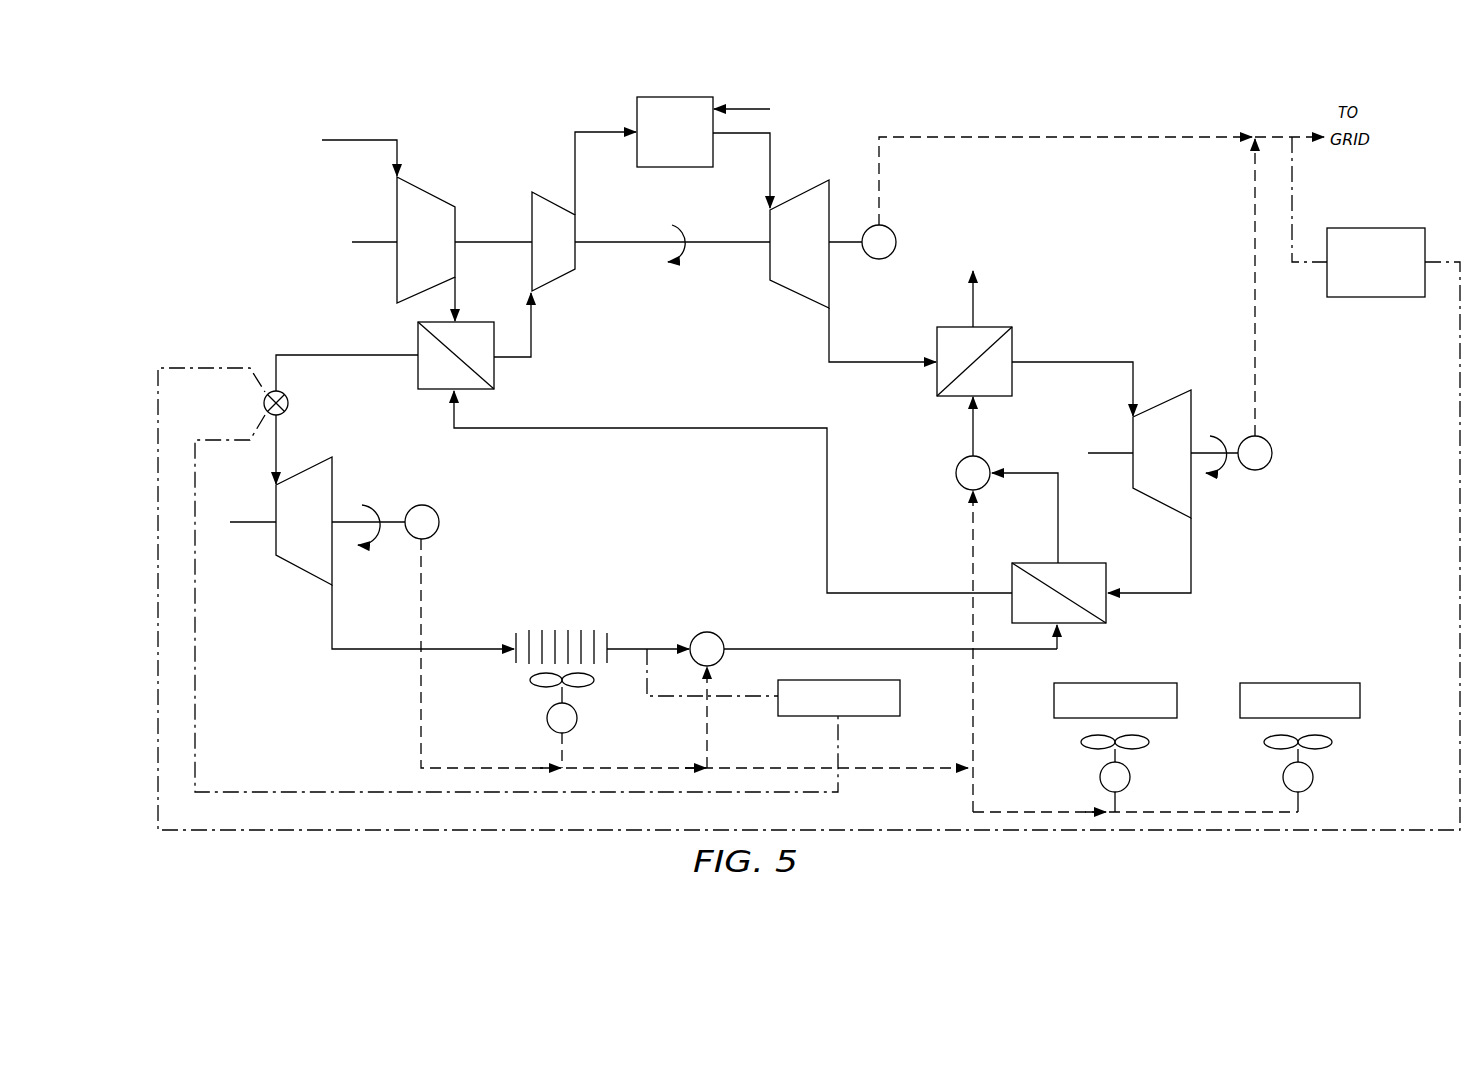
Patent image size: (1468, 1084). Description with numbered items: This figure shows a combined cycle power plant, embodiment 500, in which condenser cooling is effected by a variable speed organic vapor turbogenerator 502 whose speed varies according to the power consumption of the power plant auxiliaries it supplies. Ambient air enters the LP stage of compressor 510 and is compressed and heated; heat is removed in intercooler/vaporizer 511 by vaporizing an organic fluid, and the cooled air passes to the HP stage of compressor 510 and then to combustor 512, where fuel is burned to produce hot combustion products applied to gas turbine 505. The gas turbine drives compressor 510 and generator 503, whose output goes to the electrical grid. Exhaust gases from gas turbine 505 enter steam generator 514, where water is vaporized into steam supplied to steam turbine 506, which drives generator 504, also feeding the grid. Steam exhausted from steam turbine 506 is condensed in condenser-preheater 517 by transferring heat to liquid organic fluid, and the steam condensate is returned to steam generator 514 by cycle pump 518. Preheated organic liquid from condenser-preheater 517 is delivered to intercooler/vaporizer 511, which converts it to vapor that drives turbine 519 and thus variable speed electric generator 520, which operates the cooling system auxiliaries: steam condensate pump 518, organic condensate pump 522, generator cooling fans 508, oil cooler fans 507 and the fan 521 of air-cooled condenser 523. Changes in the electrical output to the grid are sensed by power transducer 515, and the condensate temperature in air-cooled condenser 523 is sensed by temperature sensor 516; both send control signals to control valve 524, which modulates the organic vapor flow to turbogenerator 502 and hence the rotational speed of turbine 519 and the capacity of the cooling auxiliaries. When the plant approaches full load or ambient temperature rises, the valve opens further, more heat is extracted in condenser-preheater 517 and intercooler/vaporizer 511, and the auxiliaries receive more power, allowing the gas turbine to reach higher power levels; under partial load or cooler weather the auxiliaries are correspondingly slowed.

The combined cycle system embodiment 500 is at (256, 830).
The organic vapor turbogenerator 502 is at (346, 597).
The generator 503 is at (891, 231).
The generator 504 is at (1267, 443).
The gas turbine 505 is at (810, 297).
The steam turbine 506 is at (1191, 393).
The oil cooler fans 507 is at (1177, 696).
The generator cooling fans 508 is at (1360, 696).
The compressor 510 is at (478, 184).
The intercooler/vaporizer 511 is at (494, 378).
The combustor 512 is at (700, 167).
The steam generator 514 is at (958, 327).
The power transducer 515 is at (1396, 297).
The temperature sensor 516 is at (900, 696).
The condenser-preheater 517 is at (1092, 623).
The cycle pump 518 is at (956, 466).
The turbine 519 is at (276, 548).
The variable speed electric generator 520 is at (436, 535).
The organic fluid condenser fan 521 is at (577, 722).
The organic condensate pump 522 is at (720, 638).
The air-cooled condenser 523 is at (574, 641).
The control valve 524 is at (288, 402).